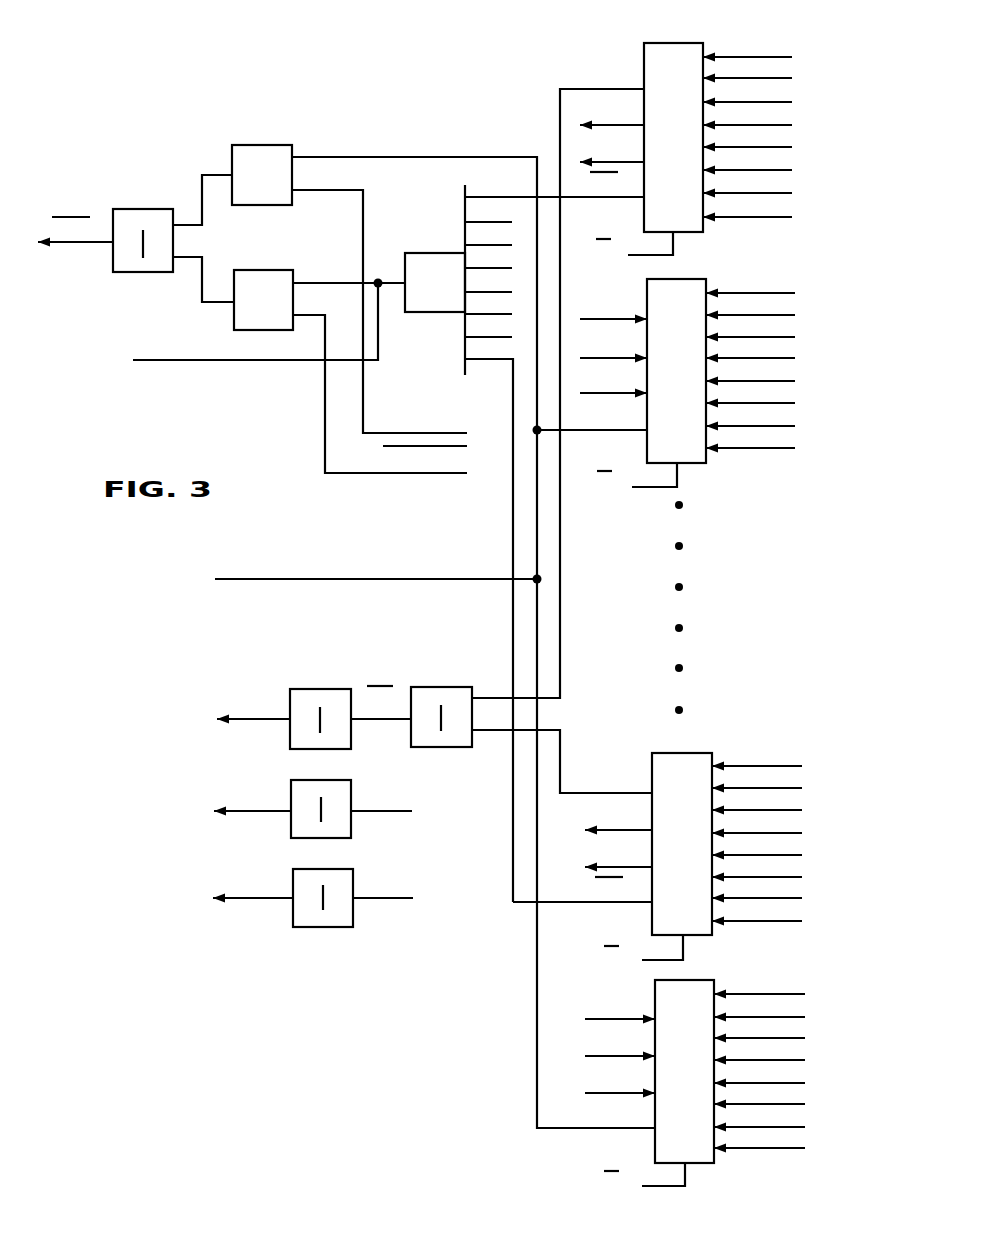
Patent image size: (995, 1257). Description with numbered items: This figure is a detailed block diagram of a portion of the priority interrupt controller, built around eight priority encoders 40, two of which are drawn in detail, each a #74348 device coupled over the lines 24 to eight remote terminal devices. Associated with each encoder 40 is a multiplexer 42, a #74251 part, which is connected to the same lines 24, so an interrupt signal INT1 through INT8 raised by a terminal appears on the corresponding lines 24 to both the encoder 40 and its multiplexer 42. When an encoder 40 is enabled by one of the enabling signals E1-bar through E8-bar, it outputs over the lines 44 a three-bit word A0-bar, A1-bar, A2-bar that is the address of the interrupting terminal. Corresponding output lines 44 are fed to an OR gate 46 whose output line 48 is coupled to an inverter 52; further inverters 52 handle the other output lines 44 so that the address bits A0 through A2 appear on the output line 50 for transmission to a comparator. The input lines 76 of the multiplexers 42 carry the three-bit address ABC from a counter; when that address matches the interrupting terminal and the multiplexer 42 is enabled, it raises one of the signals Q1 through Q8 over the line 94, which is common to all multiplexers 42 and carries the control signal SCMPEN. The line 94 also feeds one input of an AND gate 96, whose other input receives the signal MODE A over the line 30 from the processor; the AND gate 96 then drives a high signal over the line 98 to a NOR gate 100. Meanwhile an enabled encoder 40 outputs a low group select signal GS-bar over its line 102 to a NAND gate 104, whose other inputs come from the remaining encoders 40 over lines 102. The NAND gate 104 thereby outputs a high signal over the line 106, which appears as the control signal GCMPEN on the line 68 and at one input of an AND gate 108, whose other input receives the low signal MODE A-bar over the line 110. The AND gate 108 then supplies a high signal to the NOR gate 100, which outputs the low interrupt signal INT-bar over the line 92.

The priority encoder 40 is at (675, 47).
The multiplexer 42 is at (672, 282).
The output lines 44 is at (594, 160).
The lines 24 is at (770, 218).
The input lines 76 is at (587, 318).
The line 94 is at (427, 155).
The line 102 is at (572, 200).
The AND gate 96 is at (265, 153).
The NOR gate 100 is at (157, 215).
The line 92 is at (85, 248).
The line 98 is at (203, 220).
The AND gate 108 is at (250, 273).
The line 106 is at (303, 282).
The NAND gate 104 is at (447, 255).
The line 30 is at (363, 368).
The line 68 is at (215, 362).
The line 110 is at (325, 405).
The inverter 52 is at (330, 692).
The OR gate 46 is at (452, 690).
The output line 48 is at (400, 720).
The output line 50 is at (258, 903).